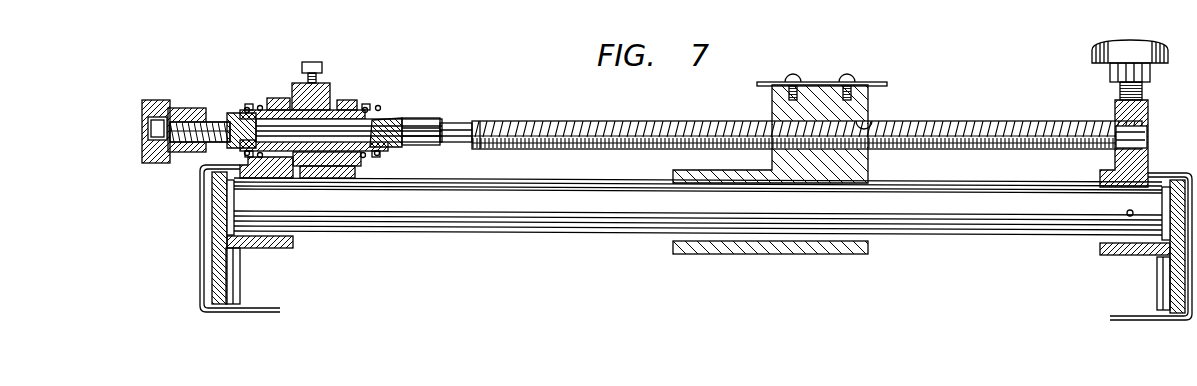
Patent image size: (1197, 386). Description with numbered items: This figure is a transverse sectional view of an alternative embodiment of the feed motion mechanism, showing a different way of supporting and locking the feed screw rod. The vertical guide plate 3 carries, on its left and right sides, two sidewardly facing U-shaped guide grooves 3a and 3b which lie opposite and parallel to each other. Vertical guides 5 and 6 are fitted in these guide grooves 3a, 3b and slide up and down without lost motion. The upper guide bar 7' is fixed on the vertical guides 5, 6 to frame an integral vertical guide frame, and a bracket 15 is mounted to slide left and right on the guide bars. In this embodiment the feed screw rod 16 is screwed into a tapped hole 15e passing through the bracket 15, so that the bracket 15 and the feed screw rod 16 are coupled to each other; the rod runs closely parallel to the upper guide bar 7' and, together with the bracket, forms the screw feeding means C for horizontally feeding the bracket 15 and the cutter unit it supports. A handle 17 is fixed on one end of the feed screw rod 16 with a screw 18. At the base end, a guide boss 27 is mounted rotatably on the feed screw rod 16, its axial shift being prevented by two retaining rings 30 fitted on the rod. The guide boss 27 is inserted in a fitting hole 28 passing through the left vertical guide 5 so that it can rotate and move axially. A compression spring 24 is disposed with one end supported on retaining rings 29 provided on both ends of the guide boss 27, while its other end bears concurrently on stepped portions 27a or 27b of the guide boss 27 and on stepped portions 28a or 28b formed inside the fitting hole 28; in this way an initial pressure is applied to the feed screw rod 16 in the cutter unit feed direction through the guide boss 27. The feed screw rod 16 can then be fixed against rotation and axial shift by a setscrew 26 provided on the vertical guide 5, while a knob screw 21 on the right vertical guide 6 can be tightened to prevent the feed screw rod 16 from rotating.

The vertical guide plate 3 is at (248, 318).
The guide groove 3a is at (200, 241).
The guide groove 3b is at (1170, 262).
The vertical guide 5 is at (241, 277).
The vertical guide 6 is at (1170, 292).
The guide bar 7' is at (698, 228).
The bracket 15 is at (790, 255).
The tapped hole 15e is at (868, 128).
The feed screw rod 16 is at (511, 121).
The handle 17 is at (152, 100).
The screw 18 is at (162, 165).
The knob screw 21 is at (1092, 53).
The compression spring 24 is at (260, 106).
The setscrew 26 is at (322, 67).
The guide boss 27 is at (330, 103).
The stepped portion 27a is at (290, 164).
The stepped portion 27b is at (337, 166).
The fitting hole 28 is at (327, 156).
The stepped portion 28a is at (283, 98).
The stepped portion 28b is at (368, 105).
The retaining ring 29 is at (247, 107).
The retaining ring 30 is at (240, 117).
The screw feeding means C is at (437, 113).